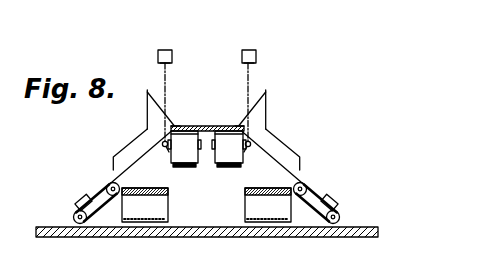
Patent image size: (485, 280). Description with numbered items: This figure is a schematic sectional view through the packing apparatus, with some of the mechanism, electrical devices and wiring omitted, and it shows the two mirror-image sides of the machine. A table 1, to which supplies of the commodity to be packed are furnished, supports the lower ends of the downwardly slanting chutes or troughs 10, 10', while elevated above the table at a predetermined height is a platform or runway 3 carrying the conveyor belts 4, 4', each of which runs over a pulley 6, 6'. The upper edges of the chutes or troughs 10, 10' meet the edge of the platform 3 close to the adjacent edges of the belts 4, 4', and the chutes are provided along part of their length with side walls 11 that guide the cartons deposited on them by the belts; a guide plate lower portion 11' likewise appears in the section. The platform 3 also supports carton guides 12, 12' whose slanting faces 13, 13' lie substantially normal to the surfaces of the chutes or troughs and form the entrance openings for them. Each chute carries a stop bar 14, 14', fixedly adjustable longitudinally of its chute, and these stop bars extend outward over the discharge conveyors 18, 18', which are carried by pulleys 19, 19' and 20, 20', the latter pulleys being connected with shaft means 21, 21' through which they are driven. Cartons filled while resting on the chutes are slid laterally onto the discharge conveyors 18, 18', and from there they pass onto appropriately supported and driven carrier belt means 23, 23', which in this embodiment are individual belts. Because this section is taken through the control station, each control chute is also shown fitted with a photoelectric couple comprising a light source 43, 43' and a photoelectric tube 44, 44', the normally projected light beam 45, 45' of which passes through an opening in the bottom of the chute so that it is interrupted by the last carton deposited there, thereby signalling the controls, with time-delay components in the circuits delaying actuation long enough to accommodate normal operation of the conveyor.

The table 1 is at (212, 228).
The platform or runway 3 is at (207, 119).
The conveyor belt 4 is at (180, 116).
The conveyor belt 4' is at (234, 115).
The pulley 6 is at (184, 149).
The pulley 6' is at (229, 149).
The chute or trough 10 is at (81, 189).
The chute or trough 10' is at (329, 187).
The side walls 11 is at (128, 147).
The guide plate lower portion 11' is at (296, 145).
The carton guide 12 is at (133, 109).
The carton guide 12' is at (290, 109).
The slanting face 13 is at (148, 101).
The slanting face 13' is at (274, 104).
The stop bar 14 is at (74, 195).
The stop bar 14' is at (346, 190).
The discharge conveyor 18 is at (64, 214).
The discharge conveyor 18' is at (356, 209).
The pulley 19 is at (103, 210).
The pulley 19' is at (310, 210).
The pulley 20 is at (127, 182).
The pulley 20' is at (285, 182).
The shaft means 21 is at (128, 158).
The shaft means 21' is at (290, 157).
The carrier belt means 23 is at (160, 198).
The carrier belt means 23' is at (255, 198).
The light source 43 is at (149, 49).
The light source 43' is at (269, 49).
The photoelectric tube 44 is at (156, 156).
The photoelectric tube 44' is at (259, 156).
The light beam 45 is at (180, 102).
The light beam 45' is at (271, 101).